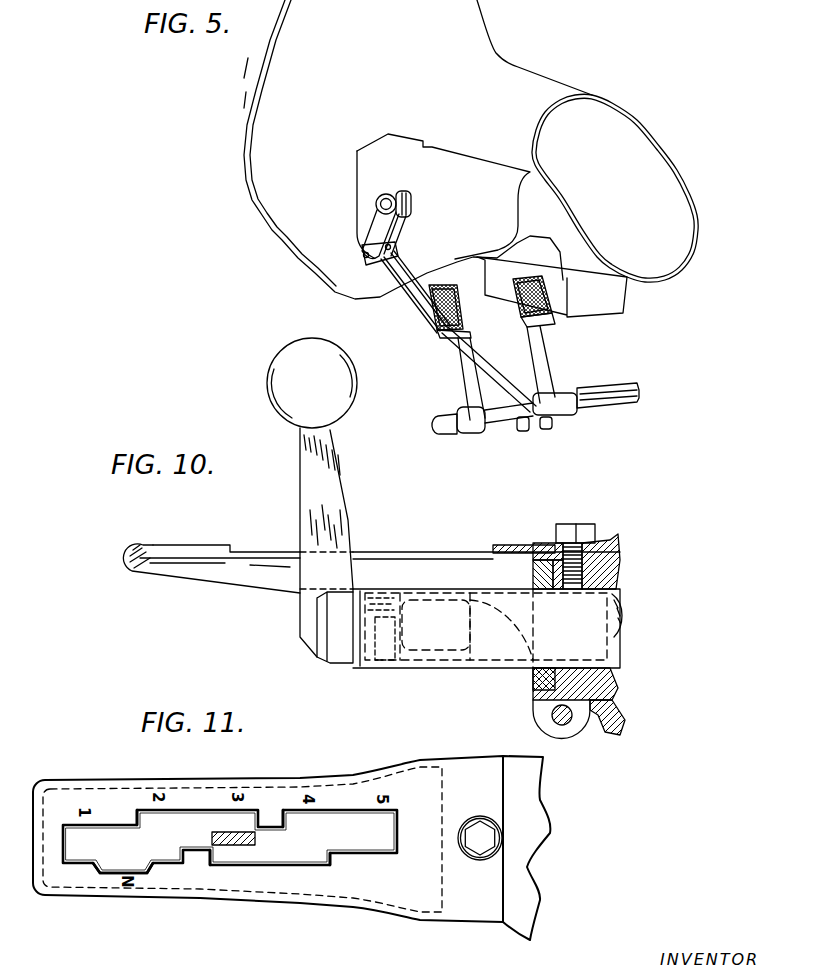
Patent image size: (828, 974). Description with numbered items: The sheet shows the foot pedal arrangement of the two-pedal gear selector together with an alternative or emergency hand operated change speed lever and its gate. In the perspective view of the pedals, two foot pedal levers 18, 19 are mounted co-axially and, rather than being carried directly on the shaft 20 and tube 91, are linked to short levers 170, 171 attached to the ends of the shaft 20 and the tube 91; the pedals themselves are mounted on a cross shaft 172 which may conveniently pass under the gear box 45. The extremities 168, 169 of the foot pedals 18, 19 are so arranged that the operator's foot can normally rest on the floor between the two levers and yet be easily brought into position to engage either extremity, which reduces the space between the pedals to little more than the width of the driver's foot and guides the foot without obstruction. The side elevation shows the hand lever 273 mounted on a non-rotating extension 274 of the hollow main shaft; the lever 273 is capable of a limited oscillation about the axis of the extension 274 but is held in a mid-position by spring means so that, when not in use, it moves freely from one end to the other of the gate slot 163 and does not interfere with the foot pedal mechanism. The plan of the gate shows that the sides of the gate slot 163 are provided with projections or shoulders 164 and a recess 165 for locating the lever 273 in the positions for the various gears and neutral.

In FIG. 5, the gear box 45 is at (494, 62).
In FIG. 5, the shaft 20 is at (376, 197).
In FIG. 5, the tube 91 is at (412, 199).
In FIG. 5, the short lever 170 is at (382, 222).
In FIG. 5, the short lever 171 is at (397, 227).
In FIG. 5, the extremity of foot pedal 169 is at (447, 310).
In FIG. 5, the extremity of foot pedal 168 is at (540, 318).
In FIG. 5, the foot pedal lever 19 is at (466, 372).
In FIG. 5, the foot pedal lever 18 is at (548, 368).
In FIG. 5, the cross shaft 172 is at (455, 432).
In FIG. 10, the hand control lever 273 is at (333, 498).
In FIG. 11, the hand control lever 273 is at (243, 833).
In FIG. 10, the non-rotating extension 274 is at (512, 598).
In FIG. 11, the shoulders 164 is at (208, 850).
In FIG. 11, the recess 165 is at (137, 866).
In FIG. 11, the gate slot 163 is at (300, 847).